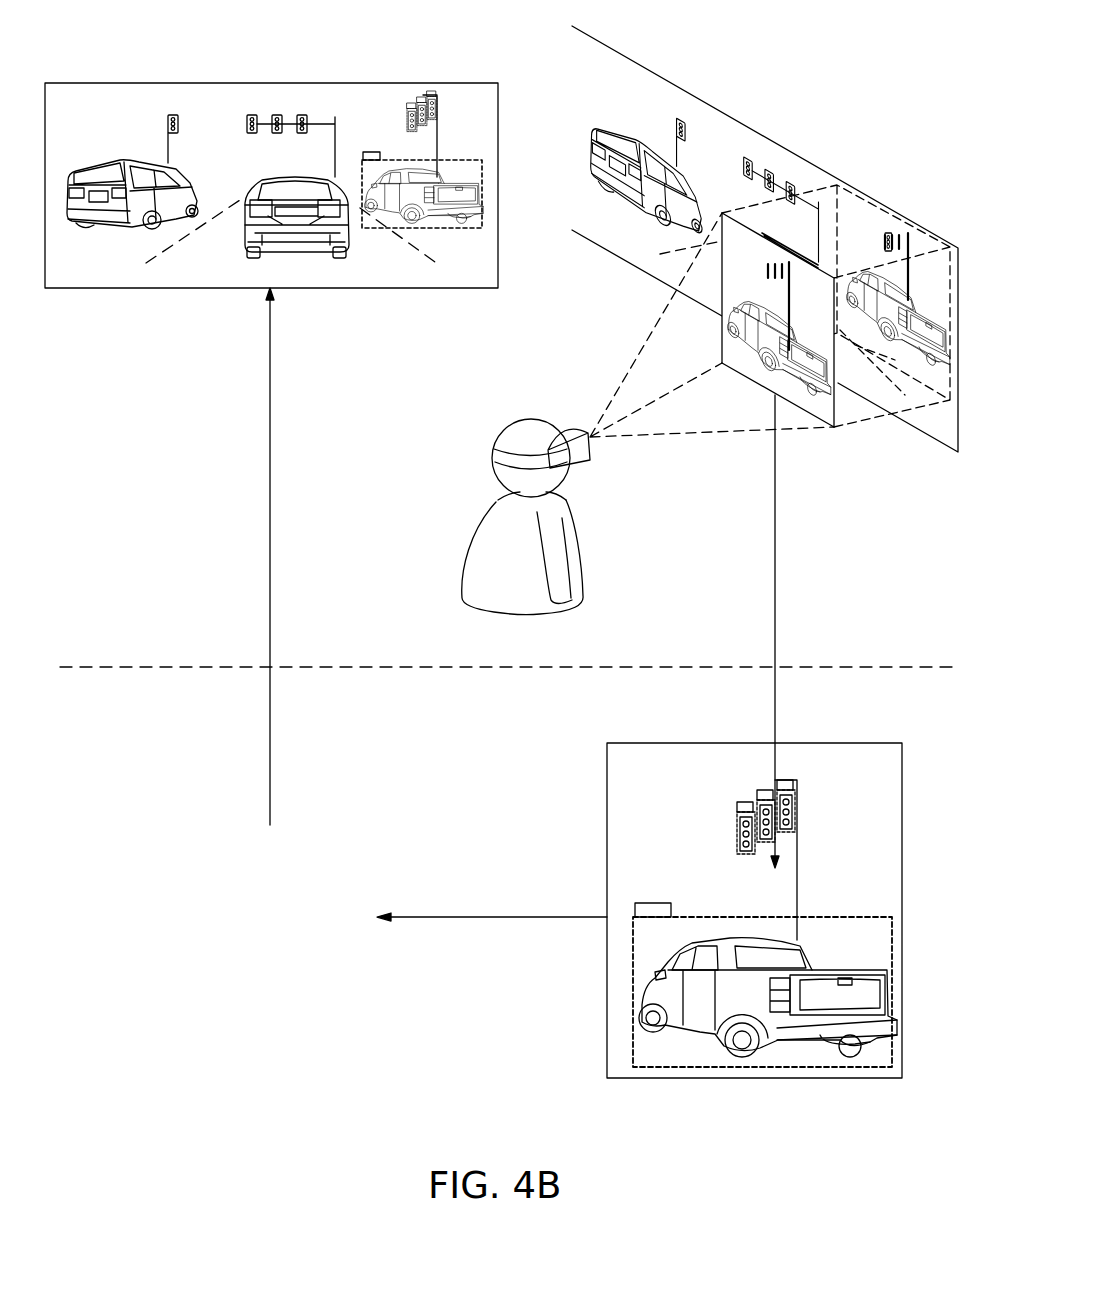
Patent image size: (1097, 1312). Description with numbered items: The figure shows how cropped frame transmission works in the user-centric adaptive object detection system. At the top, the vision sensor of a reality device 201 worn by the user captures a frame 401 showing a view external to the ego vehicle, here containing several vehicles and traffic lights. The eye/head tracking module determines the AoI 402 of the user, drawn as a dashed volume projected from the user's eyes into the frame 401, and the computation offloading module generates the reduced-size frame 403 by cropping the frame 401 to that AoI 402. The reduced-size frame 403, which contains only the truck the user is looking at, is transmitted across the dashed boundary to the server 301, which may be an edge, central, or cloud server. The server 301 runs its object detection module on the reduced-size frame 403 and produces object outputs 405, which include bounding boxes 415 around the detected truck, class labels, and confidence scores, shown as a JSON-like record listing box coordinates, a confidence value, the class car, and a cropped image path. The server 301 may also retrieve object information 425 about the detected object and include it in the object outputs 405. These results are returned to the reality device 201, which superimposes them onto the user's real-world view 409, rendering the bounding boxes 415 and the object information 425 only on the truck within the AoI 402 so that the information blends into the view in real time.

The reality device 201 is at (588, 456).
The server 301 is at (528, 707).
The frame 401 is at (723, 112).
The area of interest (AoI) 402 is at (877, 205).
The reduced-size frame 403 is at (828, 428).
The object outputs 405 is at (865, 752).
The real-world view 409 is at (253, 83).
The bounding boxes 415 is at (448, 230).
The object information 425 is at (428, 92).